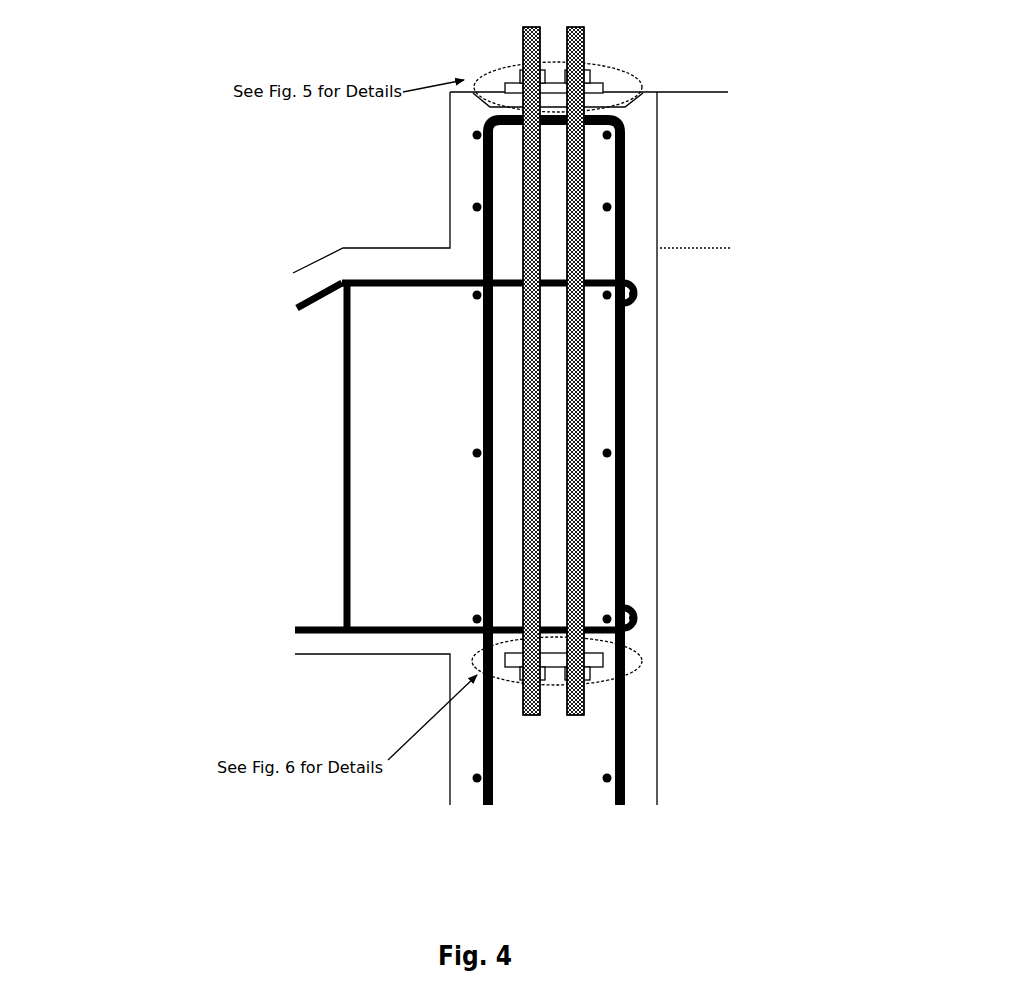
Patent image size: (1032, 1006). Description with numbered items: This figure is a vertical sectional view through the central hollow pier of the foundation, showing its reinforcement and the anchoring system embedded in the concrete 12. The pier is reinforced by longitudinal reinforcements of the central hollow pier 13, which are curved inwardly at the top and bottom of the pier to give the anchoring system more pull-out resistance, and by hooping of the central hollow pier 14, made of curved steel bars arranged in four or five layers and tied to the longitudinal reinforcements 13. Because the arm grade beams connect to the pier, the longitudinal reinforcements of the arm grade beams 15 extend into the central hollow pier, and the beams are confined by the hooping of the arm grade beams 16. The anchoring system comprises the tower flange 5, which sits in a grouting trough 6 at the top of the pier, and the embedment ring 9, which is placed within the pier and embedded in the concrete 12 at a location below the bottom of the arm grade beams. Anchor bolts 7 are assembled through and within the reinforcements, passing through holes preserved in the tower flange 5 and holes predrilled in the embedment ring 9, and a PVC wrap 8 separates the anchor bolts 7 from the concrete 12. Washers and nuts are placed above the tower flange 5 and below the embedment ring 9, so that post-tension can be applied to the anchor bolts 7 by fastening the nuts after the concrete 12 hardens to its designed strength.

The tower flange 5 is at (607, 82).
The grouting trough 6 is at (610, 99).
The anchor bolts 7 is at (520, 42).
The PVC wrap 8 is at (590, 208).
The embedment ring 9 is at (605, 661).
The concrete 12 is at (296, 556).
The longitudinal reinforcements of central hollow pier 13 is at (621, 446).
The hooping of central hollow pier 14 is at (490, 297).
The longitudinal reinforcements of arm grade beams 15 is at (318, 286).
The hooping of arm grade beams 16 is at (343, 403).